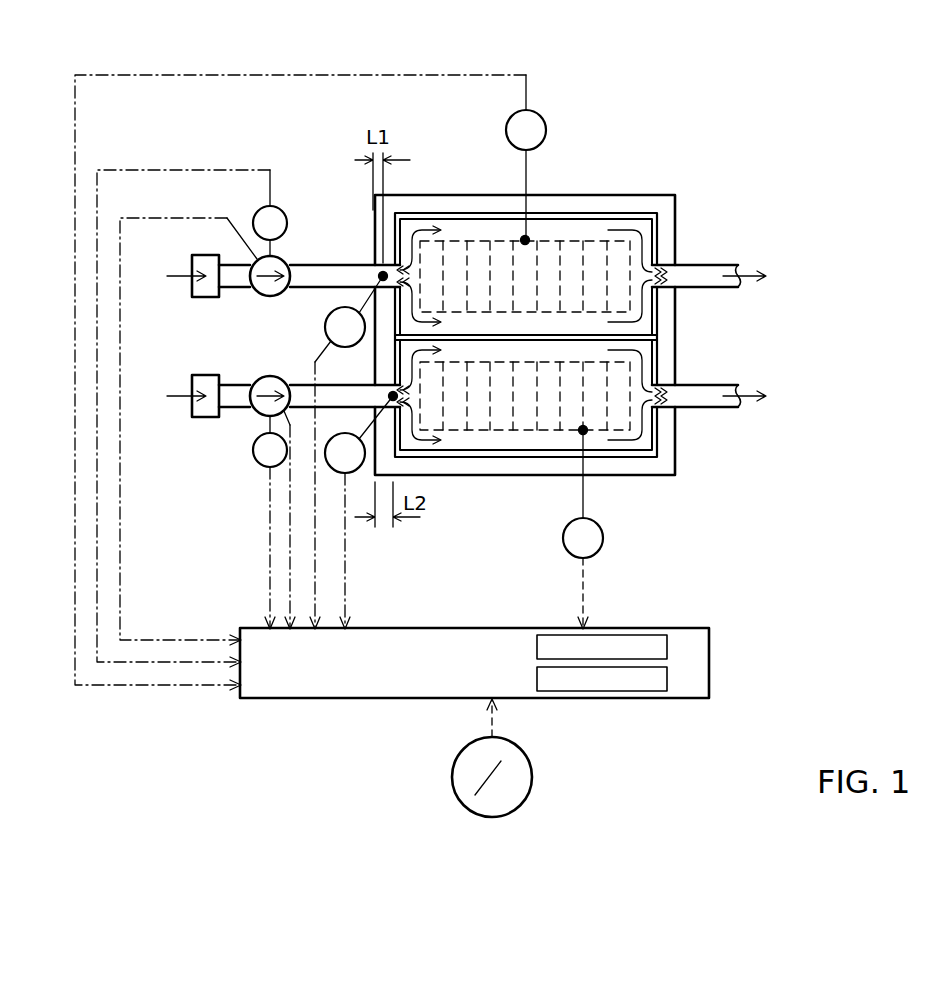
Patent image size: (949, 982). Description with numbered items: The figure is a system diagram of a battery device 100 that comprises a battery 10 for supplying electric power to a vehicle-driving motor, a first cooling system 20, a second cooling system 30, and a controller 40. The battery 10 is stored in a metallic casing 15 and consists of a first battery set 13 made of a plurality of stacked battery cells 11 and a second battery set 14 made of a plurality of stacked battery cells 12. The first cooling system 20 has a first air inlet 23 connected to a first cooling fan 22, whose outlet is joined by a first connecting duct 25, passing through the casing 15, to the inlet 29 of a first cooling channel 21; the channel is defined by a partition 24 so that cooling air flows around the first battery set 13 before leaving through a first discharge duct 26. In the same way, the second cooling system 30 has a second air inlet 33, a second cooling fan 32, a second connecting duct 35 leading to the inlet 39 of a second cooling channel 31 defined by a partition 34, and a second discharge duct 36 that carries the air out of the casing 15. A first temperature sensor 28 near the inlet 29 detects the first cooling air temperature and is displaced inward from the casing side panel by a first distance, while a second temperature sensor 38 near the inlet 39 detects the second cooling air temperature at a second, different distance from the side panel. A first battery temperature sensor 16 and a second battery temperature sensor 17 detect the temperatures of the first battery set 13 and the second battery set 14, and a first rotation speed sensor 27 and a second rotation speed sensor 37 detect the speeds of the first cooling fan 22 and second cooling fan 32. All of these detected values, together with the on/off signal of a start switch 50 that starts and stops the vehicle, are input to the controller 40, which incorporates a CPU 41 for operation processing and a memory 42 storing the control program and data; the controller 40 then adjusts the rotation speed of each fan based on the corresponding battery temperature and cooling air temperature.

The battery device 100 is at (868, 146).
The first cooling system 20 is at (720, 190).
The second cooling system 30 is at (700, 482).
The battery 10 is at (643, 209).
The battery cells 11 is at (598, 238).
The battery cells 12 is at (596, 431).
The first battery set 13 is at (569, 238).
The second battery set 14 is at (563, 435).
The metallic casing 15 is at (556, 190).
The first battery temperature sensor 16 is at (540, 114).
The second battery temperature sensor 17 is at (603, 547).
The first cooling channel 21 is at (643, 228).
The second cooling channel 31 is at (634, 445).
The partition 24 is at (498, 333).
The partition 34 is at (512, 337).
The first cooling fan 22 is at (257, 293).
The second cooling fan 32 is at (258, 412).
The first air inlet 23 is at (199, 299).
The second air inlet 33 is at (198, 420).
The first connecting duct 25 is at (333, 263).
The second connecting duct 35 is at (300, 384).
The first discharge duct 26 is at (722, 266).
The second discharge duct 36 is at (718, 386).
The first rotation speed sensor 27 is at (260, 212).
The second rotation speed sensor 37 is at (262, 462).
The first temperature sensor 28 is at (326, 325).
The second temperature sensor 38 is at (338, 473).
The inlet 29 is at (388, 276).
The inlet 39 is at (397, 397).
The controller 40 is at (709, 665).
The CPU 41 is at (667, 648).
The memory 42 is at (667, 680).
The start switch 50 is at (532, 776).